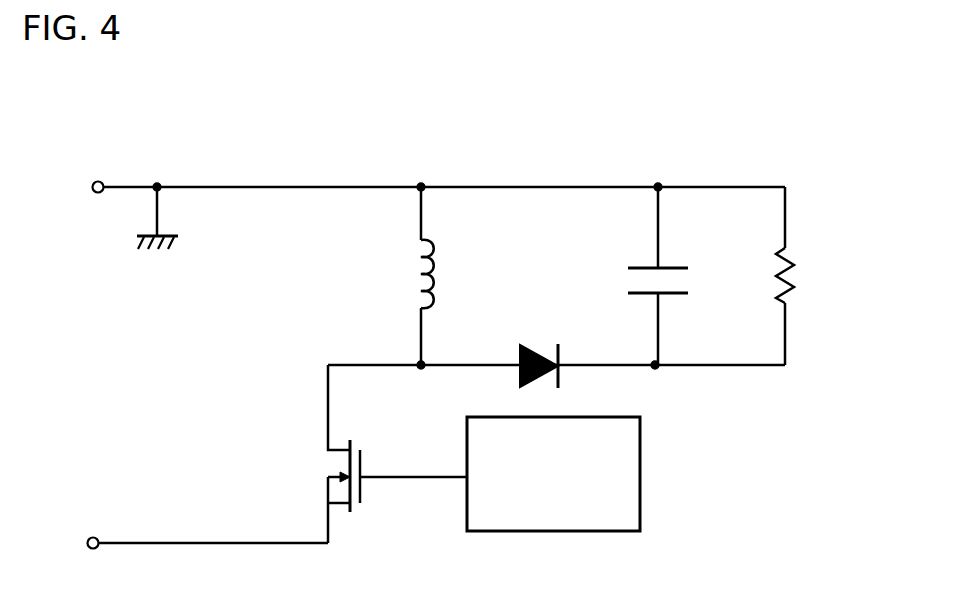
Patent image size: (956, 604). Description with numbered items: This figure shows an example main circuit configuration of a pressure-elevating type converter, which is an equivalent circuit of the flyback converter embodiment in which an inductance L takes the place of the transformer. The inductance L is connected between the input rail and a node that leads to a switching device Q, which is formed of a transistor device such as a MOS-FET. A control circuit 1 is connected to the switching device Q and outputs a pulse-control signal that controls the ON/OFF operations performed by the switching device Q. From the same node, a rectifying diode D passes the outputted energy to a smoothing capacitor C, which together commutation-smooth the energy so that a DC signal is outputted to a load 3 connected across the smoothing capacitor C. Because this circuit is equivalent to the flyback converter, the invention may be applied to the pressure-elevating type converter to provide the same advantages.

The inductance L is at (432, 278).
The rectifying diode D is at (530, 345).
The smoothing capacitor C is at (688, 284).
The load 3 is at (796, 282).
The switching device Q is at (362, 490).
The control circuit 1 is at (553, 532).